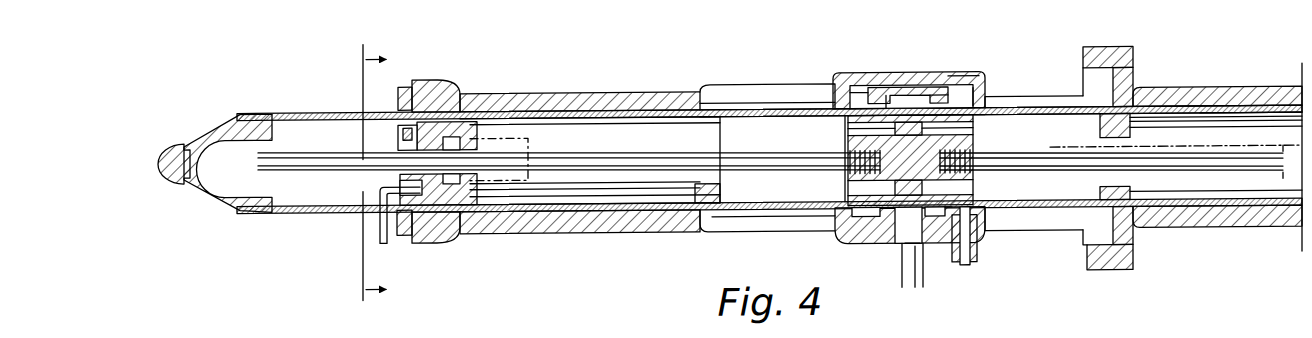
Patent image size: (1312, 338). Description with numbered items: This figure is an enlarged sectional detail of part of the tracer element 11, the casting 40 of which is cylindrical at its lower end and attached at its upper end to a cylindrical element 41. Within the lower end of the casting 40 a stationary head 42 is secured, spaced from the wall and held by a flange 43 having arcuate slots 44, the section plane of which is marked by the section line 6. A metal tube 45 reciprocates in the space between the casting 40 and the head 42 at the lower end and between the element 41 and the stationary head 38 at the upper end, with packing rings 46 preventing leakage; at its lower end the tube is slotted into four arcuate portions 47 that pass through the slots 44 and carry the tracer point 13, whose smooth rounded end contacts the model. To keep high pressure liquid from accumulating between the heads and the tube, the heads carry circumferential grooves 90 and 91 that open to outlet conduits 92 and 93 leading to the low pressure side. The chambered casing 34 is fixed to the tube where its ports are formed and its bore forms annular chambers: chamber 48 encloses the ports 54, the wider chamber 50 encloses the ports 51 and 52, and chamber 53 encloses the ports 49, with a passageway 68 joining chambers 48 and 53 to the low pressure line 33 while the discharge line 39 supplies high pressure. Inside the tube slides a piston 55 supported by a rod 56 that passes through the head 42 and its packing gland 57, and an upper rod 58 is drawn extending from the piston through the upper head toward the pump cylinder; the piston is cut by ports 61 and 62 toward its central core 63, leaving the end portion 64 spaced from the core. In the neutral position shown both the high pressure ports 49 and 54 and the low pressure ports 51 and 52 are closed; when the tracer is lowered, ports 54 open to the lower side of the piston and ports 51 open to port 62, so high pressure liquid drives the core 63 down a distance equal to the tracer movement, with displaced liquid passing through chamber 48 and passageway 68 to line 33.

The section line 6- 6 is at (365, 175).
The tracer element 11 is at (640, 230).
The tracer tool or point 13 is at (178, 184).
The low pressure line 33 is at (965, 259).
The chambered casing 34 is at (860, 234).
The stationary head 38 is at (1230, 106).
The discharge line 39 is at (920, 245).
The casting 40 is at (572, 76).
The cylindrical element 41 is at (1192, 227).
The stationary head 42 is at (620, 119).
The flange 43 is at (405, 238).
The arcuate slots 44 is at (400, 206).
The metal tube 45 is at (770, 114).
The packing rings 46 is at (700, 121).
The arcuate portions 47 is at (297, 213).
The chamber 48 is at (842, 89).
The high pressure ports 49 is at (965, 110).
The chamber 50 is at (910, 226).
The low pressure ports 51 is at (935, 104).
The low pressure ports 52 is at (888, 114).
The chamber 53 is at (952, 90).
The high pressure ports 54 is at (857, 112).
The piston 55 is at (975, 144).
The rod 56 is at (797, 141).
The packing gland 57 is at (402, 133).
The rod 58 is at (1048, 162).
The cylindrical port or slot 61 is at (900, 212).
The cylindrical port or slot 62 is at (935, 220).
The central core 63 is at (915, 170).
The end portion 64 is at (985, 123).
The passageway 68 is at (895, 108).
The circumferential groove 90 is at (707, 108).
The circumferential groove 91 is at (1130, 100).
The outlet conduit 92 is at (660, 193).
The outlet conduit 93 is at (1180, 116).